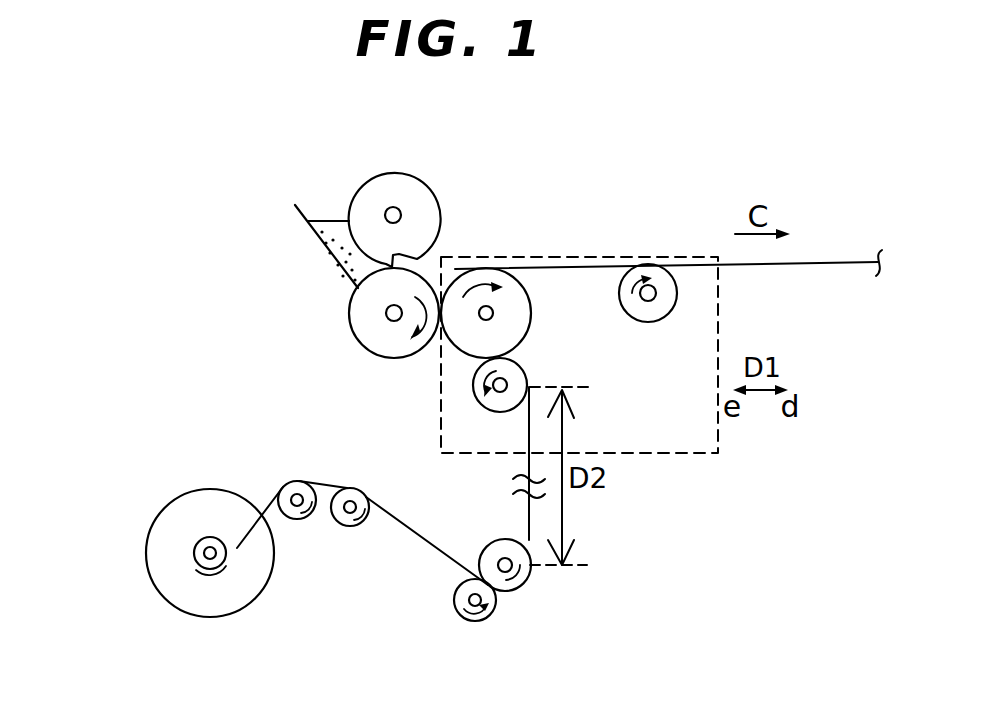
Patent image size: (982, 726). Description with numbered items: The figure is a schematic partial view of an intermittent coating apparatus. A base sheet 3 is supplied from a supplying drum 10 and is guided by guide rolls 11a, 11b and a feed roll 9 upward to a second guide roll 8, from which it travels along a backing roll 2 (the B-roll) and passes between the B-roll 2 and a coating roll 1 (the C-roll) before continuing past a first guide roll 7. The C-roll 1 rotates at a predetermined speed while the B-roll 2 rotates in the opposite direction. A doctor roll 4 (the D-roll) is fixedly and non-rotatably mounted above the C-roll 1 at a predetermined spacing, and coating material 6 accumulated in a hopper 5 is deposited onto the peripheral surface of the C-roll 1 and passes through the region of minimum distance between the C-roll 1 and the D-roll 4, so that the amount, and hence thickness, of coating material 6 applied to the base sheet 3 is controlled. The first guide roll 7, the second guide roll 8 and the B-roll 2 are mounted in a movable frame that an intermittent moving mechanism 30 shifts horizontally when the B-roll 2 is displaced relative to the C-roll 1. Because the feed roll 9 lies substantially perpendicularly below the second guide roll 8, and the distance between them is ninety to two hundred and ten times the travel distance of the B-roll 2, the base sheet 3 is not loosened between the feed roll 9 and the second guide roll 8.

The coating roll 1 is at (396, 340).
The backing roll 2 is at (512, 318).
The base sheet 3 is at (594, 257).
The doctor roll 4 is at (416, 220).
The hopper 5 is at (306, 212).
The coating material 6 is at (332, 224).
The first guide roll 7 is at (652, 323).
The second guide roll 8 is at (513, 370).
The feed roll 9 is at (513, 591).
The supplying drum 10 is at (177, 545).
The guide roll 11a is at (291, 520).
The guide roll 11b is at (342, 525).
The intermittent moving mechanism 30 is at (676, 478).